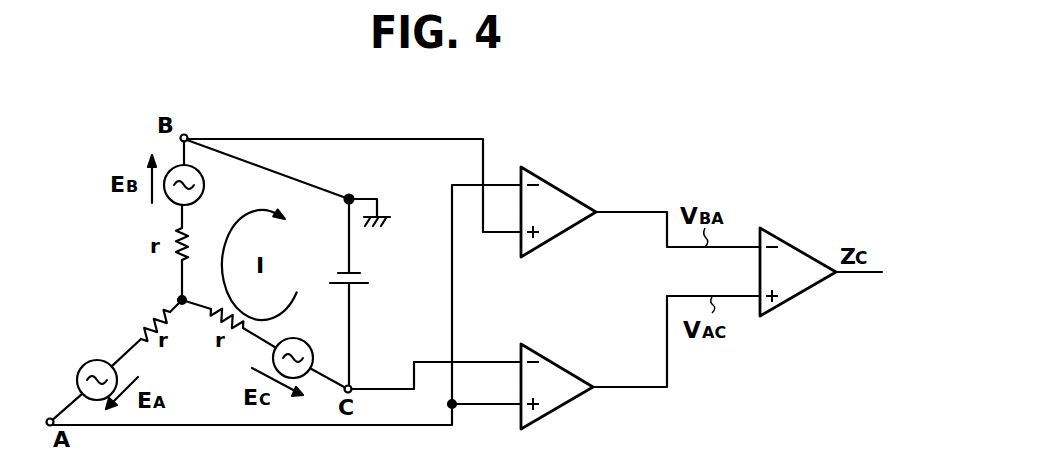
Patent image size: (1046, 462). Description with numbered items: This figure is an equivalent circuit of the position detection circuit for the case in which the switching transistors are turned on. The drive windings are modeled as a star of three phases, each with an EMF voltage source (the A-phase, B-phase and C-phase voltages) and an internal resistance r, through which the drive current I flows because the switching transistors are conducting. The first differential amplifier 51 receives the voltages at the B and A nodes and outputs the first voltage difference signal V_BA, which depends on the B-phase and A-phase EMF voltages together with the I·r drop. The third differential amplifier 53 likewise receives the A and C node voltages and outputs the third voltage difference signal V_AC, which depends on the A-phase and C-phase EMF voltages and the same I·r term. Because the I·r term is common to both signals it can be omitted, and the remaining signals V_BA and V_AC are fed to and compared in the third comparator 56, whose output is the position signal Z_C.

The first differential amplifier 51 is at (577, 202).
The third differential amplifier 53 is at (565, 395).
The third comparator 56 is at (800, 287).